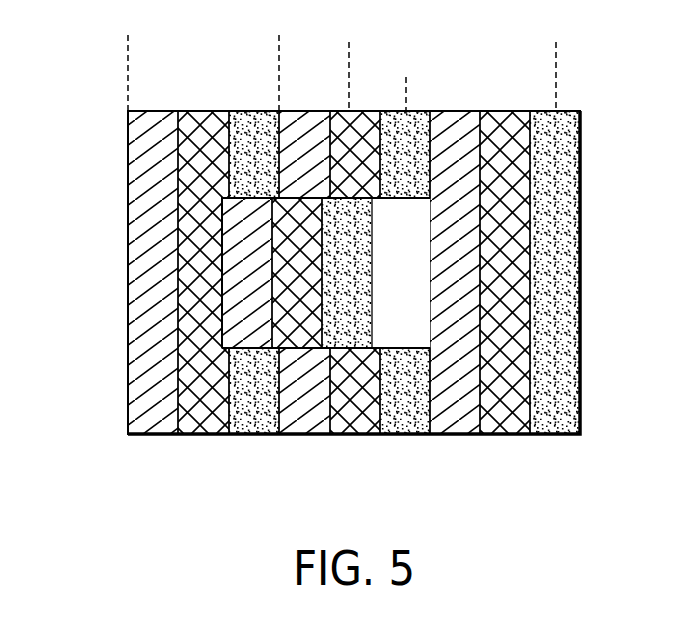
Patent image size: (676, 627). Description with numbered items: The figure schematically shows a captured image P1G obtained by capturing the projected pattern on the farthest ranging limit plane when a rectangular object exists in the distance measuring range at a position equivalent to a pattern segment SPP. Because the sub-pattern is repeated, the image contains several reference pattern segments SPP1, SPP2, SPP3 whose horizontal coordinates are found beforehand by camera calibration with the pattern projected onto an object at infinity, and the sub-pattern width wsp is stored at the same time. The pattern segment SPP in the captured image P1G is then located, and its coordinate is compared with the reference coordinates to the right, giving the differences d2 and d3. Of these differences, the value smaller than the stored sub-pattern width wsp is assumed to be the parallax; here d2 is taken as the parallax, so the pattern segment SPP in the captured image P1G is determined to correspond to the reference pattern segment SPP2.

The captured image P1G is at (308, 305).
The pattern segment SPP1 is at (252, 420).
The pattern segment SPP is at (354, 330).
The pattern segment SPP2 is at (407, 418).
The pattern segment SPP3 is at (560, 418).
The sub-pattern width wsp is at (279, 75).
The difference d2 is at (406, 93).
The difference d3 is at (556, 50).